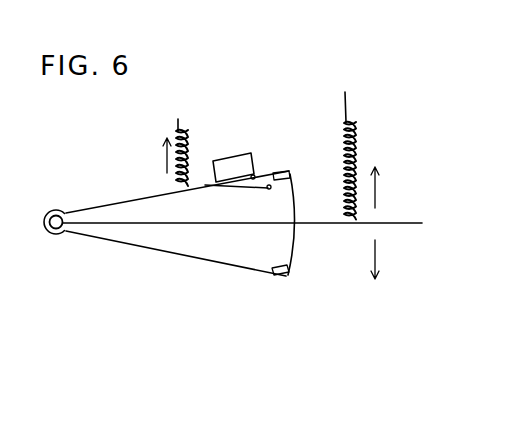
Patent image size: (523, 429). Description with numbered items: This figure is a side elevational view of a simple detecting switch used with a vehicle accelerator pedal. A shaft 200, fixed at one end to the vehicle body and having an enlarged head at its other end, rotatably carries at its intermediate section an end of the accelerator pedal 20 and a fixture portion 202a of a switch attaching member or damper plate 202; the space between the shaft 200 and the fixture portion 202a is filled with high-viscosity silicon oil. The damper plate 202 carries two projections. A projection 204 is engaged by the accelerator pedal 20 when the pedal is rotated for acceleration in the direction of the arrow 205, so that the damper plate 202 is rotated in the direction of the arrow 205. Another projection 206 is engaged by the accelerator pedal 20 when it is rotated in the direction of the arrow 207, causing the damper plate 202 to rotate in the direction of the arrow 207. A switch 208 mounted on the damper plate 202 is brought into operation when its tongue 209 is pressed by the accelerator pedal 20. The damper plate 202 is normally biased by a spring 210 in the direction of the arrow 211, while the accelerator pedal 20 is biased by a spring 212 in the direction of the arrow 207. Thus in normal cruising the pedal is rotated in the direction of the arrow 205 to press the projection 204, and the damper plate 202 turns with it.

The accelerator pedal 20 is at (228, 226).
The shaft 200 is at (53, 235).
The damper plate 202 is at (160, 253).
The fixture portion 202a is at (50, 212).
The projection 204 is at (290, 274).
The arrow 205 is at (378, 265).
The projection 206 is at (292, 173).
The arrow 207 is at (378, 196).
The switch 208 is at (244, 157).
The tongue 209 is at (263, 192).
The spring 210 is at (184, 134).
The arrow 211 is at (167, 160).
The spring 212 is at (357, 127).